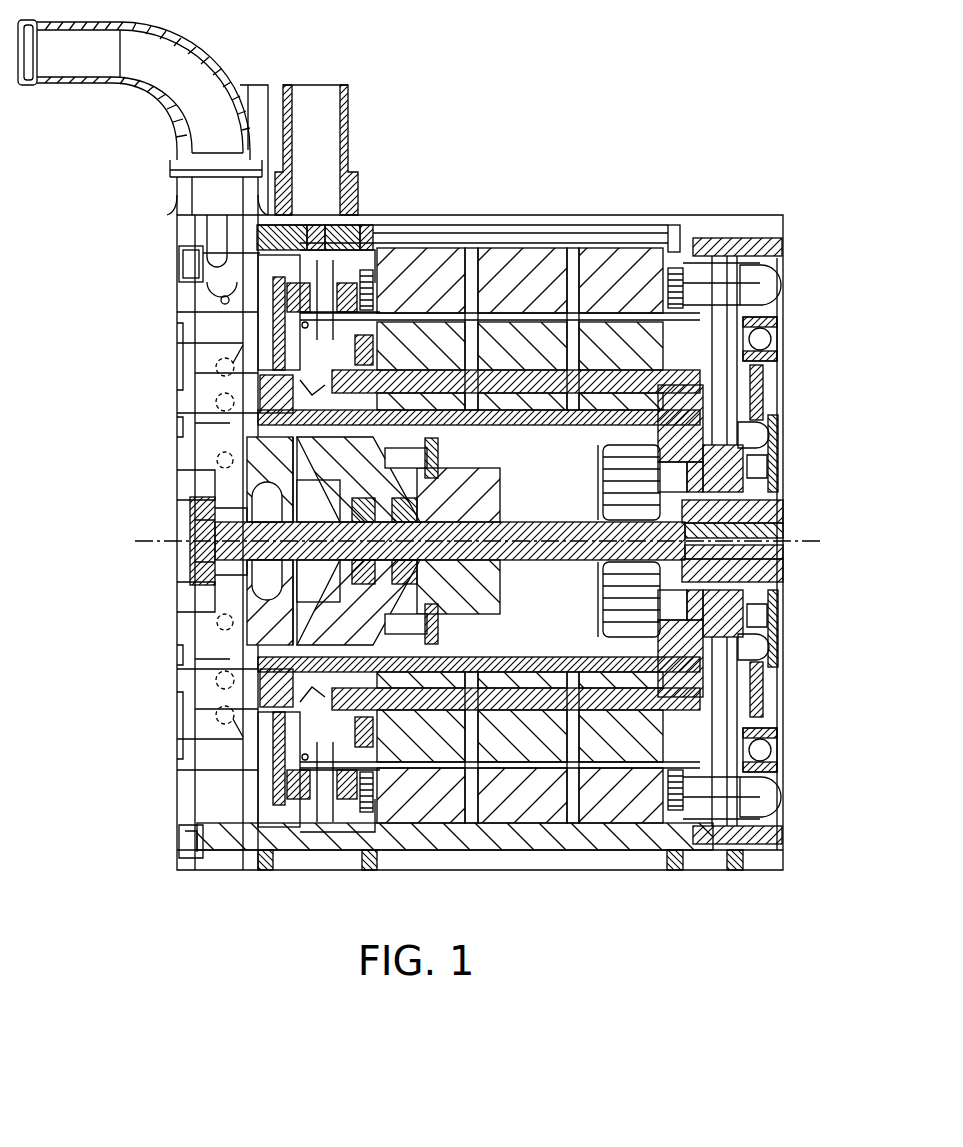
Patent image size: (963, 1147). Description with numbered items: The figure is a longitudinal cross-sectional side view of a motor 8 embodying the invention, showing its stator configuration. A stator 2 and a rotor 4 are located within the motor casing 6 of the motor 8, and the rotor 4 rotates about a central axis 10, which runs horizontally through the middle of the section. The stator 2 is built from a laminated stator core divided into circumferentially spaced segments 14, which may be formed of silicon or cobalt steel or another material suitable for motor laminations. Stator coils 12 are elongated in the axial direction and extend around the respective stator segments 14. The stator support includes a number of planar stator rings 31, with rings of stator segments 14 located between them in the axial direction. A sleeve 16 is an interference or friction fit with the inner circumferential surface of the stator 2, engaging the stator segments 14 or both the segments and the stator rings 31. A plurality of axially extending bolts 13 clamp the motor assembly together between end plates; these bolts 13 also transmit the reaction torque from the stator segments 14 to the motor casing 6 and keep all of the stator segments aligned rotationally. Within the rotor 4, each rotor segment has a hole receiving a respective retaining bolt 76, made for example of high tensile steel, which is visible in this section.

The stator 2 is at (525, 256).
The rotor 4 is at (641, 745).
The motor casing 6 is at (565, 862).
The motor 8 is at (150, 328).
The central axis 10 is at (147, 540).
The stator coils 12 is at (674, 250).
The axially extending bolts 13 is at (181, 263).
The stator segments 14 is at (446, 818).
The sleeve 16 is at (625, 322).
The stator rings 31 is at (470, 247).
The retaining bolt 76 is at (533, 393).